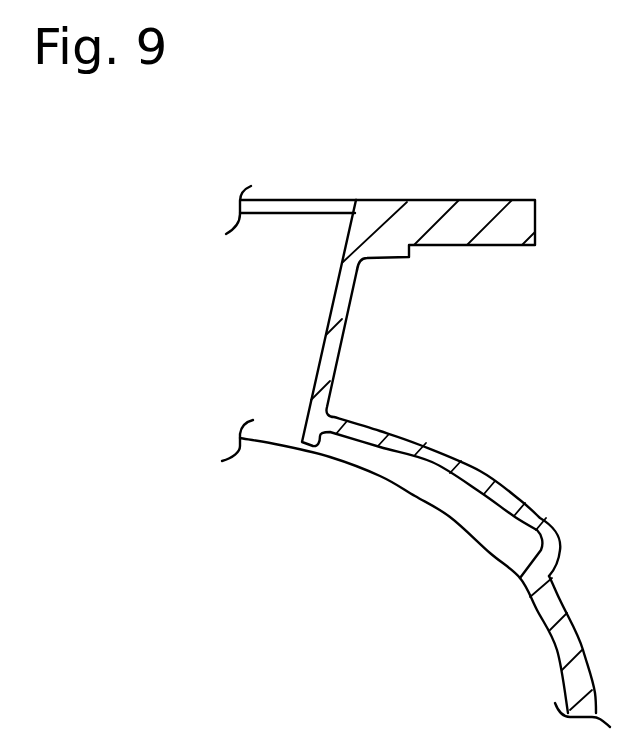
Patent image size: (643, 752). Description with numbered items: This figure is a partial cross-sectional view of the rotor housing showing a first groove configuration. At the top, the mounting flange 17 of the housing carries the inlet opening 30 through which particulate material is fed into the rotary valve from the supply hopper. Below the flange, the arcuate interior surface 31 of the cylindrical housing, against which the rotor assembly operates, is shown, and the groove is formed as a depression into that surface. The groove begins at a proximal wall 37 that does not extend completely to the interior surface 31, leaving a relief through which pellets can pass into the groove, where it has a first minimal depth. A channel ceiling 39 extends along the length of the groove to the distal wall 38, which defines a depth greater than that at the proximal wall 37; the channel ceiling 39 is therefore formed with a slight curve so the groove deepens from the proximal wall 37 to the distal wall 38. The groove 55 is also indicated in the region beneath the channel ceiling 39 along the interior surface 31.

The inlet opening 30 is at (277, 234).
The mounting flange 17 is at (482, 207).
The proximal wall 37 is at (315, 446).
The interior surface 31 is at (270, 448).
The channel ceiling 39 is at (432, 462).
The groove 55 is at (449, 549).
The distal wall 38 is at (532, 565).